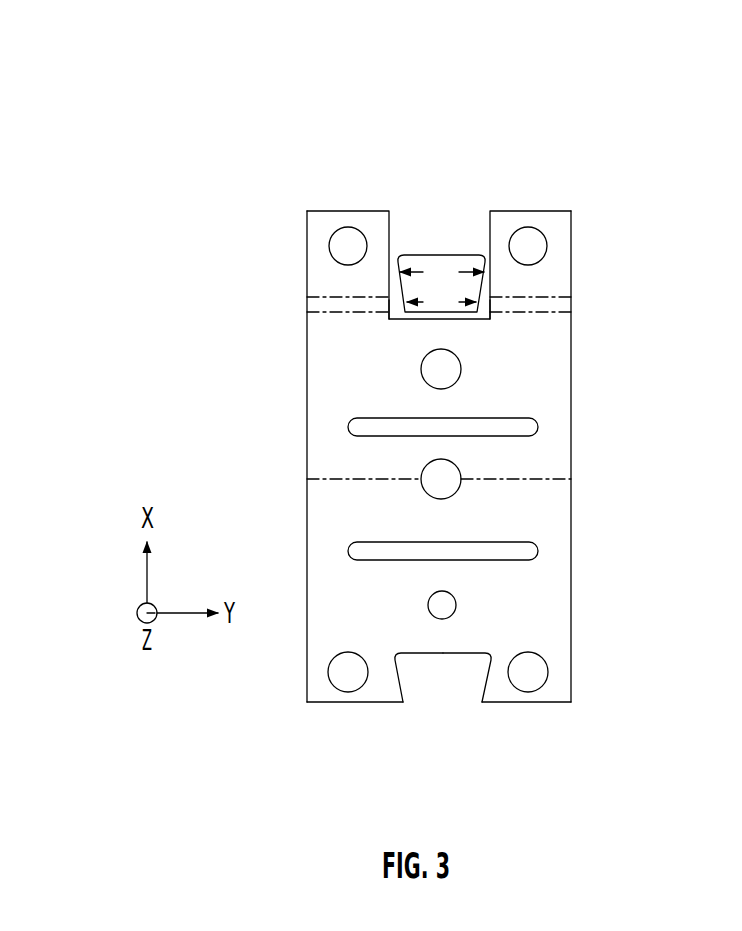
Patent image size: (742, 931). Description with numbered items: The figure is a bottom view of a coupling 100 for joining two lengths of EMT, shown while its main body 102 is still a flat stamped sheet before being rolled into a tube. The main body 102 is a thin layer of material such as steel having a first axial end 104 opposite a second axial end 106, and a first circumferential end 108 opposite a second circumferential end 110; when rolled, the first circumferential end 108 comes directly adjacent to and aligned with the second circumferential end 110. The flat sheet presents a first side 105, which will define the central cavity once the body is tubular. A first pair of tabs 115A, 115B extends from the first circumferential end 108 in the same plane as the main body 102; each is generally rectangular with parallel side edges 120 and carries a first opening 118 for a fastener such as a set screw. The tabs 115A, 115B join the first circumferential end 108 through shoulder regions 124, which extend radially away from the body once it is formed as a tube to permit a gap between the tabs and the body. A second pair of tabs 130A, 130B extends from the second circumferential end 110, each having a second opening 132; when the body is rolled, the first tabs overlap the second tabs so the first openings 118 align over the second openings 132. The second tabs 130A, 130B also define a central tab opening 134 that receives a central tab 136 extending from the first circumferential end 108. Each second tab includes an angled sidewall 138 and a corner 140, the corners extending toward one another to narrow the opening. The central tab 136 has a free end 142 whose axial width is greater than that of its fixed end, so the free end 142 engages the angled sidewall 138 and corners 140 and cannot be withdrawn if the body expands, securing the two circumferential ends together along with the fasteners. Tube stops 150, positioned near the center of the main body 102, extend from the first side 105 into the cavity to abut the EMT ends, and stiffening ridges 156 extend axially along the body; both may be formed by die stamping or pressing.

The coupling 100 is at (395, 78).
The main body 102 is at (533, 362).
The first axial end 104 is at (577, 447).
The first side 105 is at (545, 390).
The second axial end 106 is at (295, 480).
The first circumferential end 108 is at (290, 286).
The second circumferential end 110 is at (300, 715).
The first tab 115A is at (315, 272).
The first tab 115B is at (565, 270).
The first opening 118 is at (335, 236).
The side edges 120 is at (389, 228).
The shoulder regions 124 is at (552, 303).
The second tab 130A is at (315, 677).
The second tab 130B is at (567, 678).
The second opening 132 is at (350, 680).
The central tab opening 134 is at (465, 680).
The central tab 136 is at (457, 253).
The angled sidewall 138 is at (405, 680).
The corner 140 is at (500, 693).
The free end 142 is at (409, 255).
The tube stops 150 is at (441, 370).
The stiffening ridges 156 is at (520, 427).